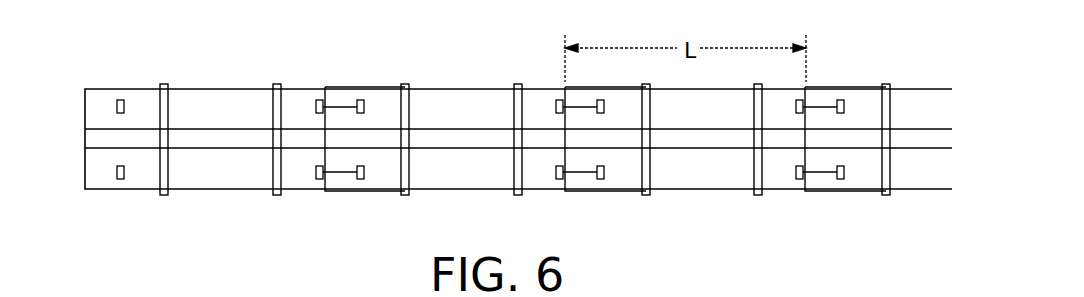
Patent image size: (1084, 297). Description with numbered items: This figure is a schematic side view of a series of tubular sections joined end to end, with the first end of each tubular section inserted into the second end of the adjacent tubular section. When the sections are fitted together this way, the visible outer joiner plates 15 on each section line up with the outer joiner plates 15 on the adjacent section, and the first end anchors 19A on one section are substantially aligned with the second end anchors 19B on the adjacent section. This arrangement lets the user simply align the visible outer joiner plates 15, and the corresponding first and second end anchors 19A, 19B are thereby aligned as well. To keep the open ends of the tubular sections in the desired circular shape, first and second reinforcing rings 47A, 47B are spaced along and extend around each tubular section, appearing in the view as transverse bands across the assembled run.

The outer joiner plate 15 is at (193, 153).
The first end anchor 19A is at (320, 98).
The second end anchor 19B is at (120, 99).
The first reinforcing ring 47A is at (163, 85).
The second reinforcing ring 47B is at (277, 85).